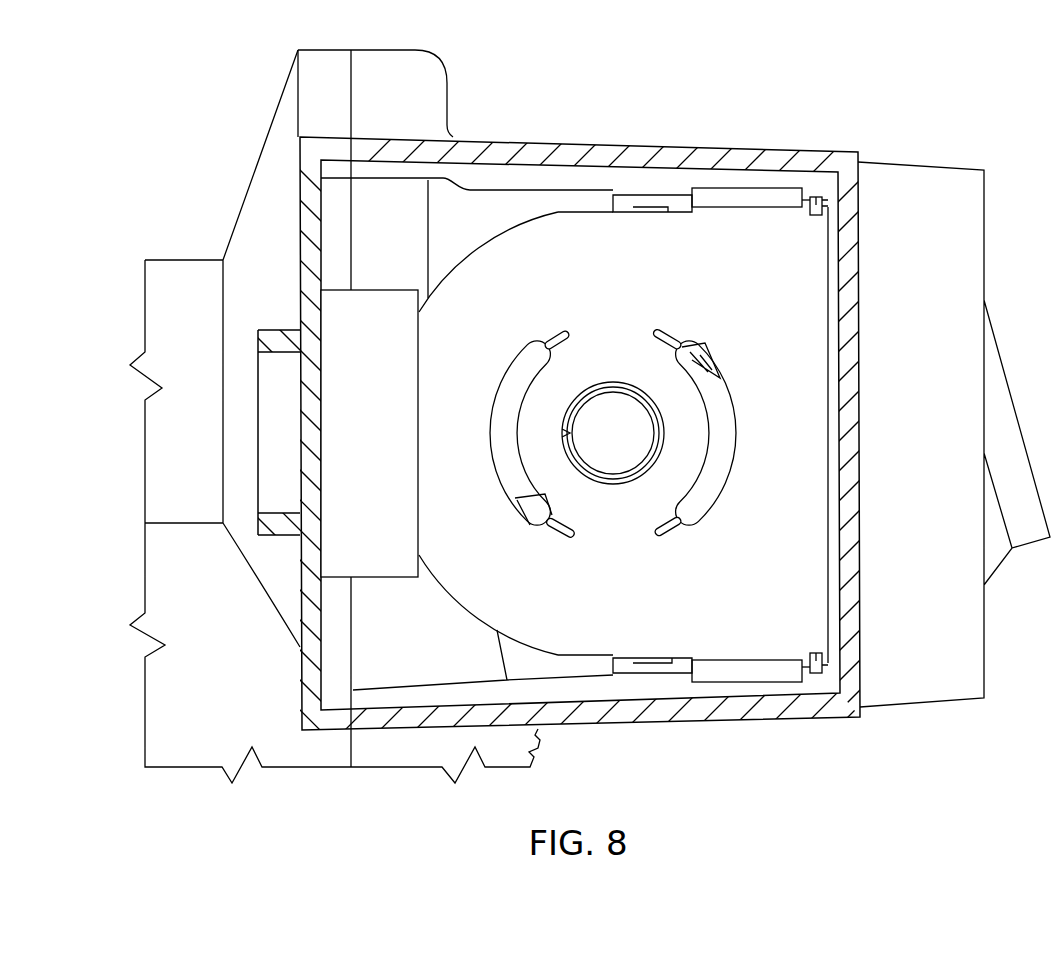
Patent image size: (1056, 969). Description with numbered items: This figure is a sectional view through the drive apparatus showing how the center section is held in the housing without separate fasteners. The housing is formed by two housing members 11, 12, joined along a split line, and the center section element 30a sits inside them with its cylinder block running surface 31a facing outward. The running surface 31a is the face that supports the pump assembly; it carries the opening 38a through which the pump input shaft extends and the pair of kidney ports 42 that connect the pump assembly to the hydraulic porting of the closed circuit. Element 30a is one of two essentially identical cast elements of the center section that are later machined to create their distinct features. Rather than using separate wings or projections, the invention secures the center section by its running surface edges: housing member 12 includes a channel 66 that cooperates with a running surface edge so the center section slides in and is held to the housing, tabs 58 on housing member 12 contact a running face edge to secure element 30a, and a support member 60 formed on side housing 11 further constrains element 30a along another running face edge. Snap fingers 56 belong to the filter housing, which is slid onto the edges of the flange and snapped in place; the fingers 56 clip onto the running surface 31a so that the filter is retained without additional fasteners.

The housing member 11 is at (310, 95).
The housing member 12 is at (382, 95).
The center section element 30a is at (511, 230).
The cylinder block running surface 31a is at (603, 557).
The opening 38a is at (595, 447).
The kidney ports 42 is at (508, 368).
The snap fingers 56 is at (816, 200).
The tabs 58 is at (748, 195).
The support member 60 is at (356, 447).
The channel 66 is at (612, 200).